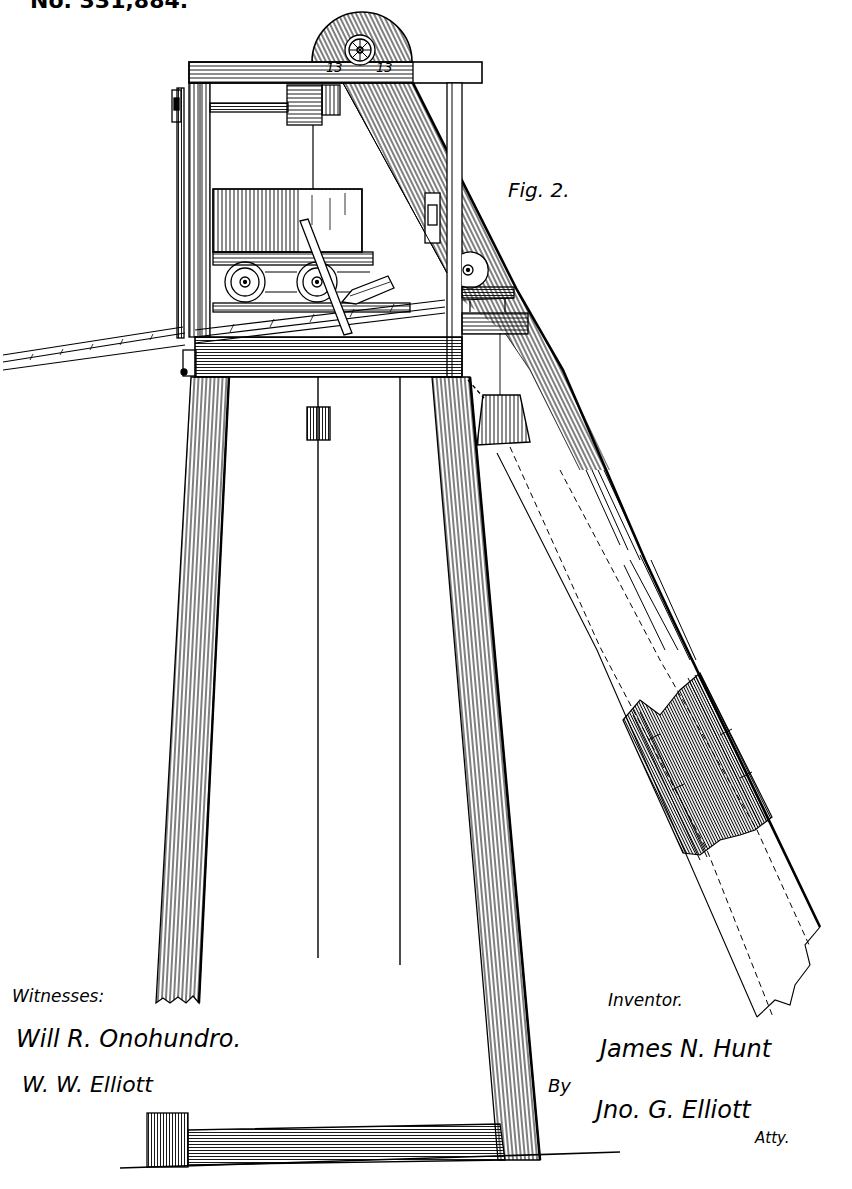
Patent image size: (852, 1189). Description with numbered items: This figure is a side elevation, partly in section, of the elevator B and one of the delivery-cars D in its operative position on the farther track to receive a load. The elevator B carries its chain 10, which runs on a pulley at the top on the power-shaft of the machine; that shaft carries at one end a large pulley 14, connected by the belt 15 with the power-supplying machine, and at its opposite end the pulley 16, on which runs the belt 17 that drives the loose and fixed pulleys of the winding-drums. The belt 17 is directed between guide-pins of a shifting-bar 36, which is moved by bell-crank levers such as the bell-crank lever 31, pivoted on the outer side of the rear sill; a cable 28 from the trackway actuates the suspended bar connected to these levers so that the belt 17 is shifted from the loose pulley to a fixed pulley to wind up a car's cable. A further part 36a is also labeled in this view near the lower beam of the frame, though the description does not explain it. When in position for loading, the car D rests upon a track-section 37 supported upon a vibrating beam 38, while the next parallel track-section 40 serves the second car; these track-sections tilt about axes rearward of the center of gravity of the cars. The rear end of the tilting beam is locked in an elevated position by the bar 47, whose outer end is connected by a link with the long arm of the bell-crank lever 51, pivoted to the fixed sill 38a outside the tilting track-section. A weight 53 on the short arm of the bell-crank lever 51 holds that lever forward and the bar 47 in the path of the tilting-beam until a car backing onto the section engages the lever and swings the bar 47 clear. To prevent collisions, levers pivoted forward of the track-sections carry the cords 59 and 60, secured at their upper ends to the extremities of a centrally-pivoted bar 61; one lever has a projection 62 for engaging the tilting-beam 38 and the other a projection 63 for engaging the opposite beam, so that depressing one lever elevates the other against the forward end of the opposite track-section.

The elevator B is at (581, 550).
The chain 10 is at (722, 740).
The large pulley 14 is at (325, 30).
The pulley 16 is at (374, 50).
The cord 60 is at (189, 261).
The cord 59 is at (177, 155).
The centrally-pivoted bar 61 is at (172, 94).
The lug or projection 62 is at (296, 122).
The projection 63 is at (252, 112).
The car D is at (311, 250).
The track-section 37 is at (430, 236).
The rail portion 36a is at (392, 346).
The bell-crank lever 51 is at (312, 236).
The shifting-bar 36 is at (440, 206).
The belt 17 is at (392, 147).
The cable 28 is at (482, 268).
The vibrating beam 38 is at (515, 291).
The bar 47 is at (522, 308).
The fixed sill 38a is at (533, 322).
The bell-crank lever 31 is at (484, 365).
The track-section 40 is at (500, 447).
The belt 15 is at (400, 568).
The weight 53 is at (330, 420).